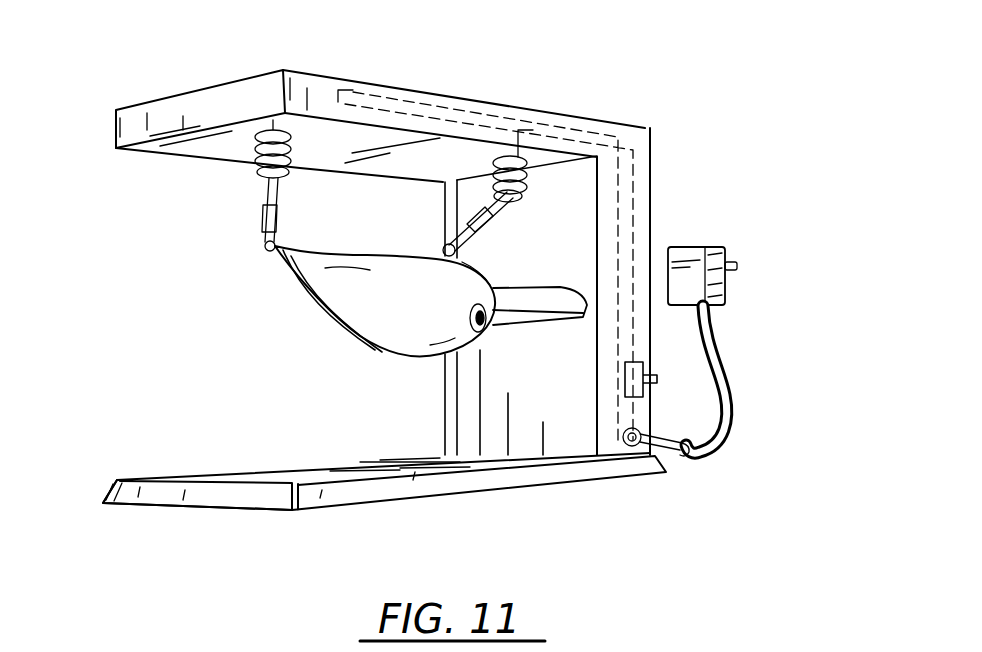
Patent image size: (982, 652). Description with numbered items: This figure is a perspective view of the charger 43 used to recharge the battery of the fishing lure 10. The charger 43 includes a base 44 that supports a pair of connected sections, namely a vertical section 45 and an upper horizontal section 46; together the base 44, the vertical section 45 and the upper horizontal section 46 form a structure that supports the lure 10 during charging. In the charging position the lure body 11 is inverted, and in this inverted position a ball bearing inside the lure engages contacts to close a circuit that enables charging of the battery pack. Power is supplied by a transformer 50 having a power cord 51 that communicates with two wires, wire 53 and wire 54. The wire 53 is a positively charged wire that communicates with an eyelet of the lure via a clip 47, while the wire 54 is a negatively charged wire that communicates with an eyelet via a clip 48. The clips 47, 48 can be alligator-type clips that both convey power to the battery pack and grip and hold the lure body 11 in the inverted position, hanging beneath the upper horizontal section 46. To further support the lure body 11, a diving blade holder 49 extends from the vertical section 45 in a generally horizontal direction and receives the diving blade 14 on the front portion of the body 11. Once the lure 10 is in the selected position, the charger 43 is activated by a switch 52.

The fishing lure 10 is at (229, 319).
The body 11 is at (348, 338).
The diving blade 14 is at (538, 290).
The charger 43 is at (108, 503).
The base 44 is at (268, 468).
The vertical section 45 is at (468, 398).
The upper horizontal section 46 is at (165, 152).
The clip 47 is at (256, 198).
The clip 48 is at (445, 223).
The diving blade holder 49 is at (571, 328).
The transformer 50 is at (723, 245).
The power cord 51 is at (735, 423).
The switch 52 is at (653, 373).
The wire 53 is at (385, 97).
The wire 54 is at (635, 163).